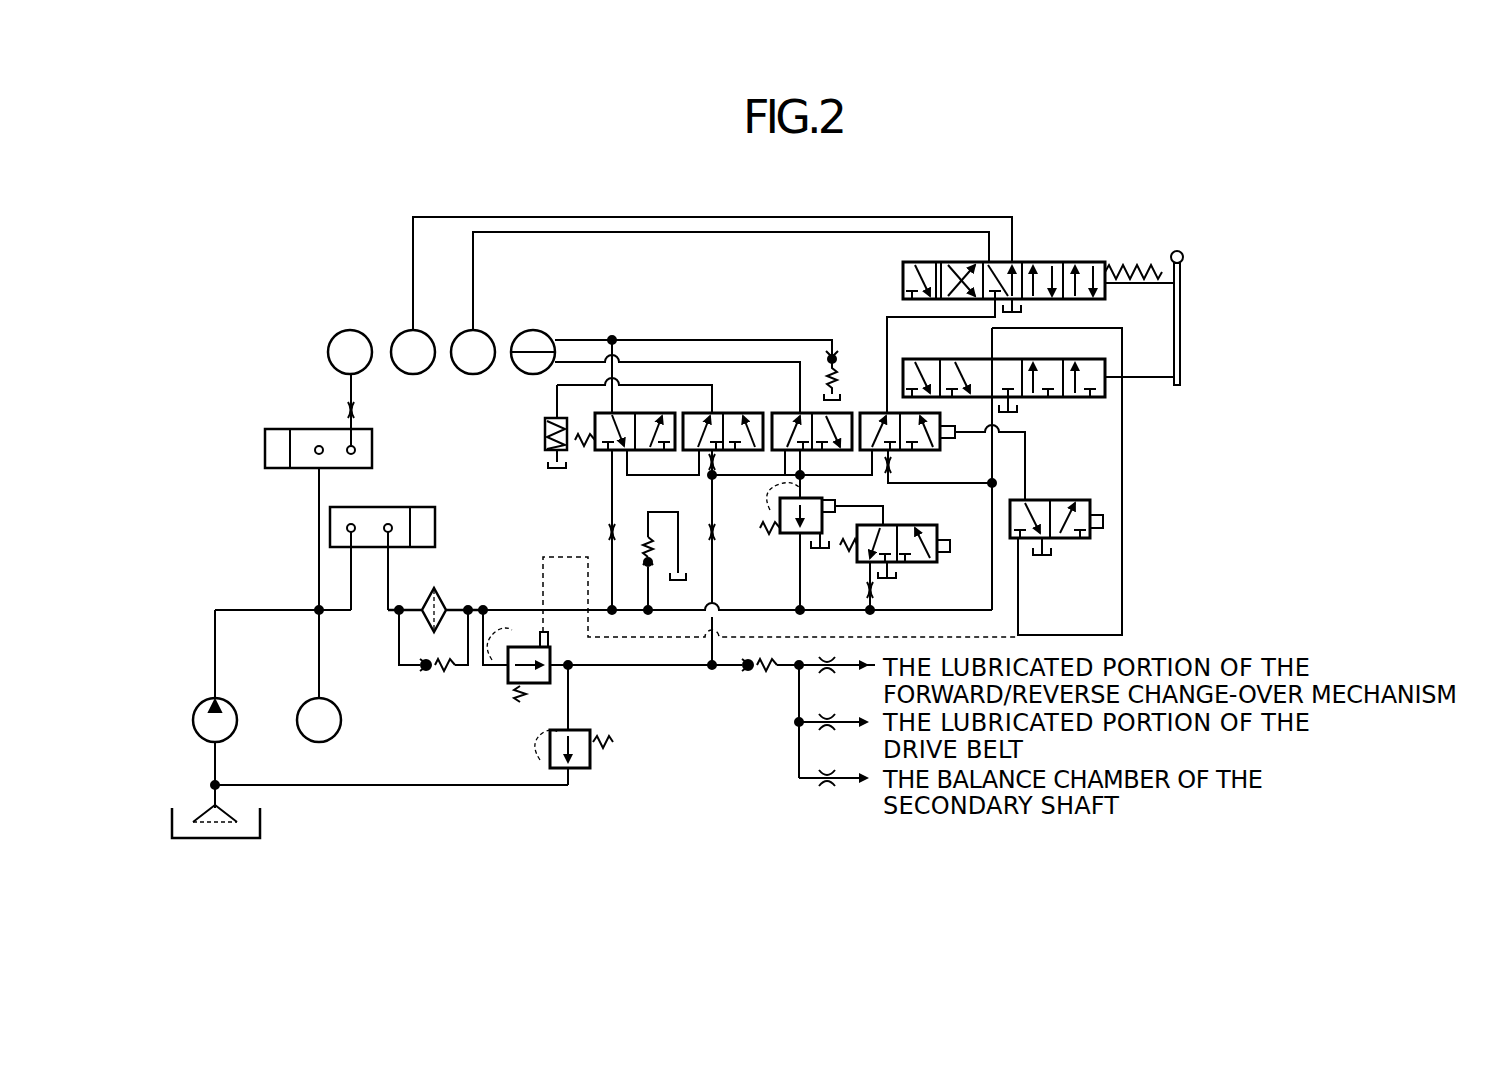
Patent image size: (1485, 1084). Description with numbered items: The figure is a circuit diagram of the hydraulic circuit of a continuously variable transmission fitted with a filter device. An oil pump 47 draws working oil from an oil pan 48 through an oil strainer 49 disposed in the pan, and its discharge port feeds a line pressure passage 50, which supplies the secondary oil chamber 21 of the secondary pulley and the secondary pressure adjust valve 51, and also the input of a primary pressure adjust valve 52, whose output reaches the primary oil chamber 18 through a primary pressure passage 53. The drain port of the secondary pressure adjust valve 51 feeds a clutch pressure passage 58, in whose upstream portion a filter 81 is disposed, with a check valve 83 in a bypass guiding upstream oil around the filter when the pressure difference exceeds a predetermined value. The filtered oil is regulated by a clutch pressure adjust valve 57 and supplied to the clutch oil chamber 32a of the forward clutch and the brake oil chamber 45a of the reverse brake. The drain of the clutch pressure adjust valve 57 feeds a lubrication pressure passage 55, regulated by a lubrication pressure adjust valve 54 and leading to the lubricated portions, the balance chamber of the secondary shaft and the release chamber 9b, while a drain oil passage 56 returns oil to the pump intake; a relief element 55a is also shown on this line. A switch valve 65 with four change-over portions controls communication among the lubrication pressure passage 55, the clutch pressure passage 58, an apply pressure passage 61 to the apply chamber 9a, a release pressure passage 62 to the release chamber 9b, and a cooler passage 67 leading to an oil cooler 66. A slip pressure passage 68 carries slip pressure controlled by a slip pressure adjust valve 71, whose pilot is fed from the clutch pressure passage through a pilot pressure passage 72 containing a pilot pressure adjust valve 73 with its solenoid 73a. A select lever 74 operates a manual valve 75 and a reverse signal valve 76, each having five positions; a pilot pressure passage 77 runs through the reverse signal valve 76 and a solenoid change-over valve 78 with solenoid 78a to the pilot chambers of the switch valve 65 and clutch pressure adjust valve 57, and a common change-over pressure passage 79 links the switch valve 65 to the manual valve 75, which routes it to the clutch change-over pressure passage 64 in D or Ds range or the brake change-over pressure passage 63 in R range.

The apply chamber 9a is at (540, 336).
The release chamber 9b is at (520, 370).
The primary oil chamber 18 is at (350, 352).
The secondary oil chamber 21 is at (319, 605).
The clutch oil chamber 32a is at (473, 352).
The brake oil chamber 45a is at (413, 352).
The oil pump 47 is at (238, 705).
The oil pan 48 is at (262, 822).
The oil strainer 49 is at (204, 820).
The line pressure passage 50 is at (274, 610).
The secondary pressure adjust valve 51 is at (436, 520).
The primary pressure adjust valve 52 is at (374, 440).
The primary pressure passage 53 is at (350, 382).
The lubrication pressure adjust valve 54 is at (592, 756).
The lubrication pressure passage 55 is at (652, 666).
The relief valve 55a is at (708, 474).
The drain oil passage 56 is at (390, 784).
The clutch pressure adjust valve 57 is at (508, 680).
The clutch pressure passage 58 is at (746, 610).
The apply pressure passage 61 is at (596, 342).
The release pressure passage 62 is at (676, 362).
The brake change-over pressure passage 63 is at (727, 218).
The clutch change-over pressure passage 64 is at (790, 233).
The switch valve 65 is at (738, 410).
The oil cooler 66 is at (544, 442).
The cooler passage 67 is at (686, 382).
The slip pressure passage 68 is at (828, 476).
The slip pressure adjust valve 71 is at (786, 538).
The pilot pressure passage 72 is at (882, 506).
The pilot pressure adjust valve 73 is at (887, 578).
The solenoid 73a is at (946, 552).
The select lever 74 is at (1174, 308).
The manual valve 75 is at (903, 290).
The reverse signal valve 76 is at (903, 380).
The pilot pressure passage 77 is at (1122, 432).
The solenoid change-over valve 78 is at (1010, 524).
The solenoid 78a is at (1100, 515).
The change-over pressure passage 79 is at (887, 332).
The filter 81 is at (444, 600).
The check valve 83 is at (428, 672).